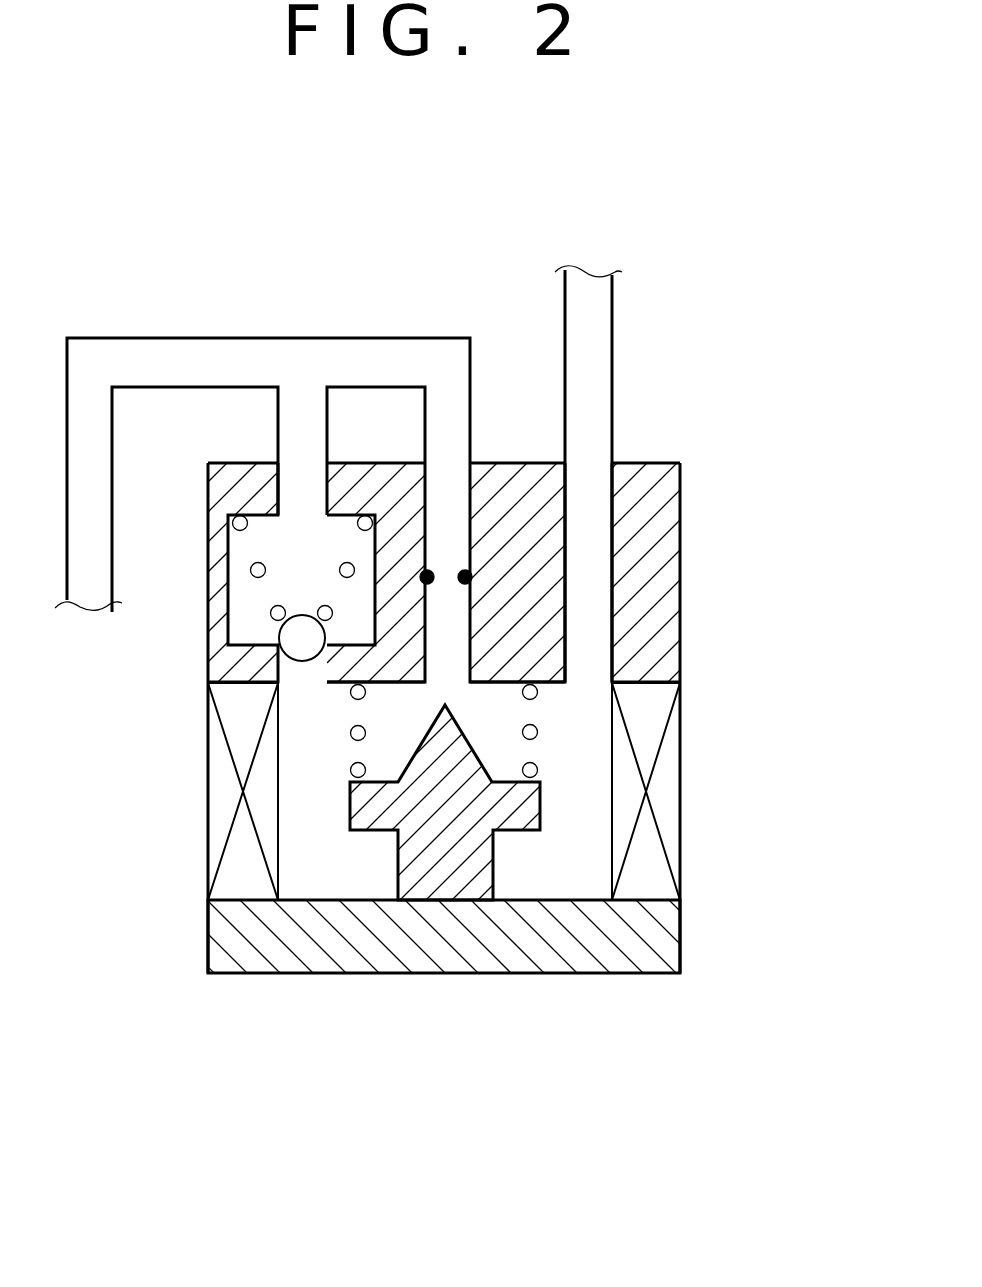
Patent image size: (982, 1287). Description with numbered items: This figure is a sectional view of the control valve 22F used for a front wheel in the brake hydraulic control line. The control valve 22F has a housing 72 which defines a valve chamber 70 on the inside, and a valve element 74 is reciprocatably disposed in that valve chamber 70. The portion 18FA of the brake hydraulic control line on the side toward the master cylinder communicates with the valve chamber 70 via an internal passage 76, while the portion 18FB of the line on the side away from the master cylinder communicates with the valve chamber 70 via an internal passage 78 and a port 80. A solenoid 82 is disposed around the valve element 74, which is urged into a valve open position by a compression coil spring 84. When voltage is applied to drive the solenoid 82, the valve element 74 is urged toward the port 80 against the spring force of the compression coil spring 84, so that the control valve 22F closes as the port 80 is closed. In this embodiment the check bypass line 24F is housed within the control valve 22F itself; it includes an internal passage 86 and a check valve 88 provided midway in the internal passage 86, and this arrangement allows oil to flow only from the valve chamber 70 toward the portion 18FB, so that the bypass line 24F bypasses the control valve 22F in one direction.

The portion of the brake hydraulic control line on the master cylinder side 18FA is at (612, 363).
The portion of the brake hydraulic control line away from the master cylinder 18FB is at (128, 338).
The control valve 22F is at (725, 490).
The bypass line with a check valve 24F is at (340, 457).
The valve chamber 70 is at (318, 870).
The housing 72 is at (680, 940).
The valve element 74 is at (455, 880).
The internal passage 76 is at (592, 593).
The internal passage 78 is at (445, 477).
The port 80 is at (448, 677).
The solenoid 82 is at (218, 830).
The compression coil spring 84 is at (537, 737).
The internal passage 86 is at (300, 513).
The check valve 88 is at (300, 677).